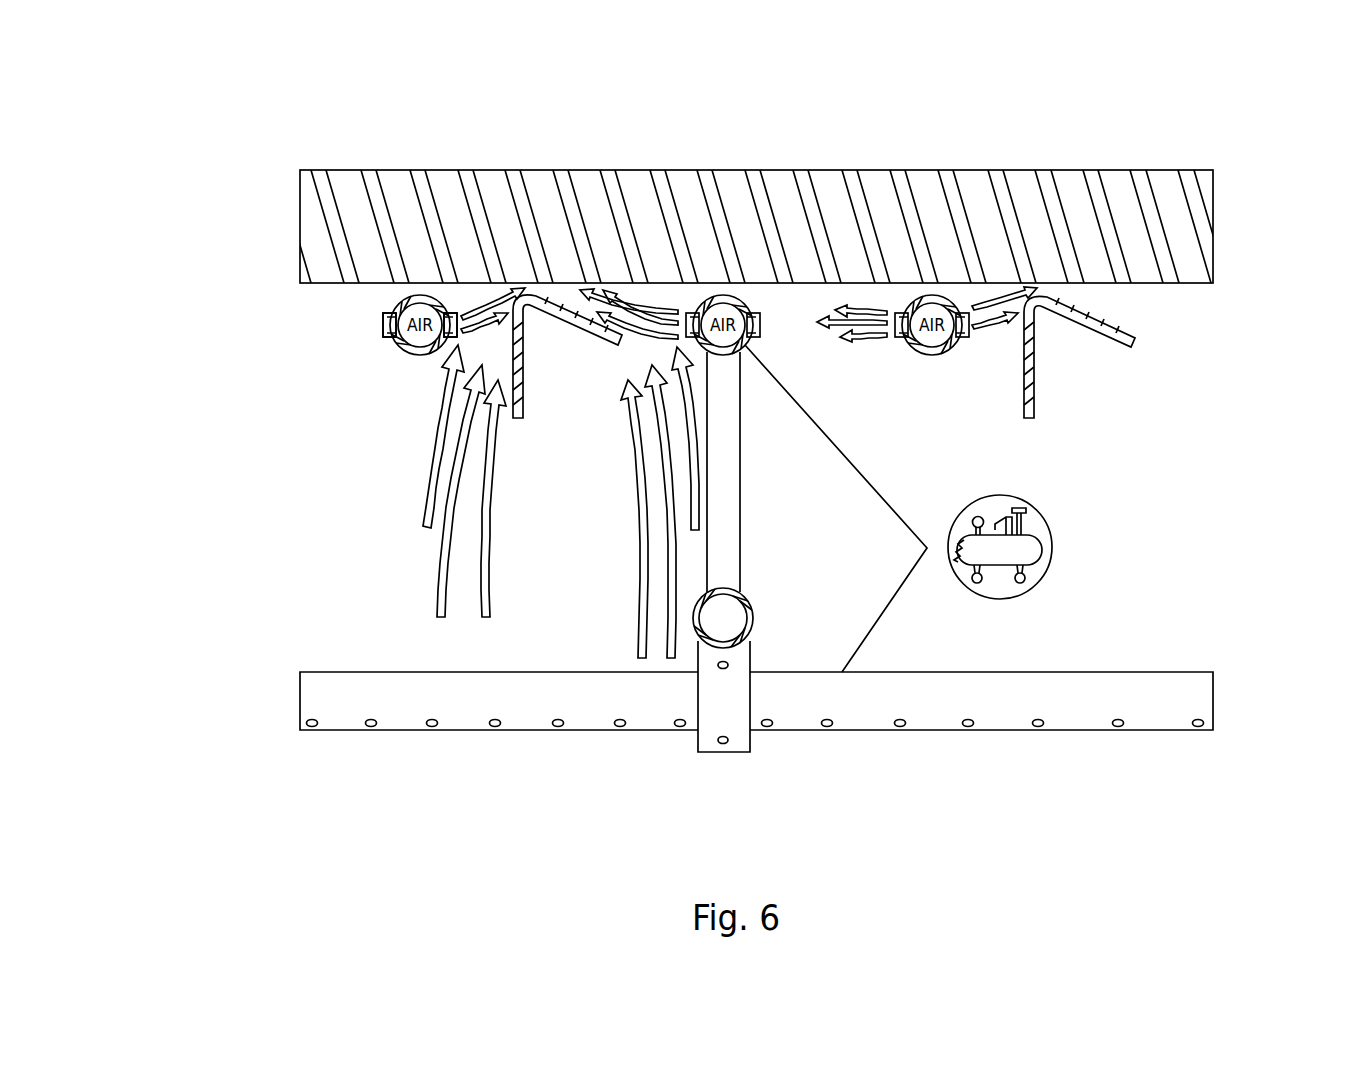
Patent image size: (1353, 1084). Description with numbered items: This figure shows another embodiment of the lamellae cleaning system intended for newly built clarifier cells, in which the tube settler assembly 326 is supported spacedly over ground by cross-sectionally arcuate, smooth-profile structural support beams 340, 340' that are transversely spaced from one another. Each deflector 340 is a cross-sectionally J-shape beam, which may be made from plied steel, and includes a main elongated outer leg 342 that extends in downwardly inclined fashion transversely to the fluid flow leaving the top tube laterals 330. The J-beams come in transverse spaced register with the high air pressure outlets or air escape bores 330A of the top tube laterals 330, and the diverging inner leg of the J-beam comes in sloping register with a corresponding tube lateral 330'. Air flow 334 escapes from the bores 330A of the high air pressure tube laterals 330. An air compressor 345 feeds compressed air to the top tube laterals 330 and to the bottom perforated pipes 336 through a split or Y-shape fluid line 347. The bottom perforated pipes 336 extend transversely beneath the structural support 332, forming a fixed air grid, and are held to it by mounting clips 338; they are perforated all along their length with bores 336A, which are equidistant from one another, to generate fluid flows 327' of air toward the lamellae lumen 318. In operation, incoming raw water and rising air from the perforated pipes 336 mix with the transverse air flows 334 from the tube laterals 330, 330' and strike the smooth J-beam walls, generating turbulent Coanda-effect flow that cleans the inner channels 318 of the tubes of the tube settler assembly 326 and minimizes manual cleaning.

The lamellae lumen 318 is at (1140, 180).
The tube settler assembly 326 is at (350, 215).
The fluid flows 327' is at (548, 596).
The top tube laterals 330 is at (562, 353).
The air escape bores 330A is at (436, 352).
The tube lateral 330' is at (951, 443).
The structural support 332 is at (752, 622).
The air flow 334 is at (863, 310).
The bottom perforated pipes 336 is at (327, 690).
The bores 336A is at (680, 723).
The mounting clips 338 is at (750, 745).
The J-beam deflector 340 is at (557, 480).
The structural support beam 340' is at (1159, 357).
The main elongated outer leg 342 is at (512, 422).
The air compressor 345 is at (1053, 547).
The split or Y-shape fluid line 347 is at (927, 548).